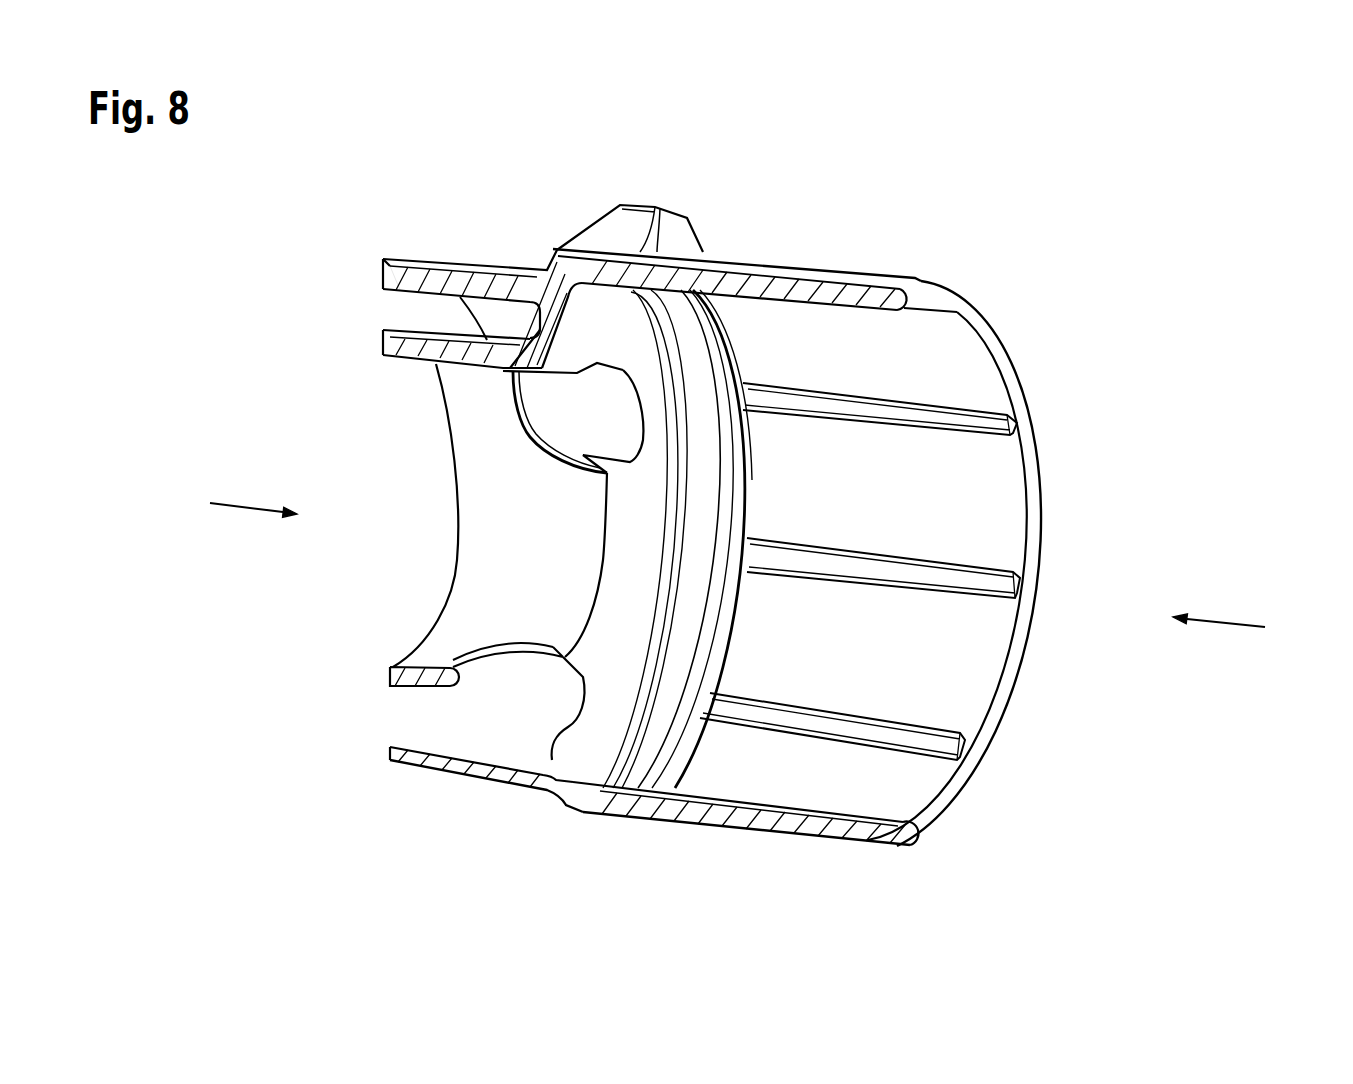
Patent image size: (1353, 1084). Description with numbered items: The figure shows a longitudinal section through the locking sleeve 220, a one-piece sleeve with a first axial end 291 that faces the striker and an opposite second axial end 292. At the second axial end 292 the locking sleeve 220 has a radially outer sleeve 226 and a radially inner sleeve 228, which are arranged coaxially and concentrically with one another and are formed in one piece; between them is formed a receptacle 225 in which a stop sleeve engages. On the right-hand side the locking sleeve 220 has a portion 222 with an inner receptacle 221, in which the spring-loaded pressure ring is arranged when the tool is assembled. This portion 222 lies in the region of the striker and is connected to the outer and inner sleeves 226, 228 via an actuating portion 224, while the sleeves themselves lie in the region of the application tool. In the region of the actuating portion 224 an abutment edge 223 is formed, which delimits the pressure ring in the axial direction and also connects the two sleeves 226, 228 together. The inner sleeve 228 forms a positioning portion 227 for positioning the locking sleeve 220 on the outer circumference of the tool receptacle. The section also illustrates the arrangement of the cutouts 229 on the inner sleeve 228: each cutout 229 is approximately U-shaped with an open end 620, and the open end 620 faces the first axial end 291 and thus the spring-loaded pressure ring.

The locking sleeve 220 is at (1202, 257).
The inner receptacle 221 is at (993, 477).
The portion 222 is at (857, 243).
The abutment edge 223 is at (620, 735).
The actuating portion 224 is at (667, 198).
The receptacle 225 is at (407, 278).
The radially outer sleeve 226 is at (460, 266).
The positioning portion 227 is at (477, 547).
The radially inner sleeve 228 is at (410, 345).
The cutout 229 is at (537, 460).
The first axial end 291 is at (1223, 618).
The second axial end 292 is at (240, 500).
The open end 620 is at (626, 473).